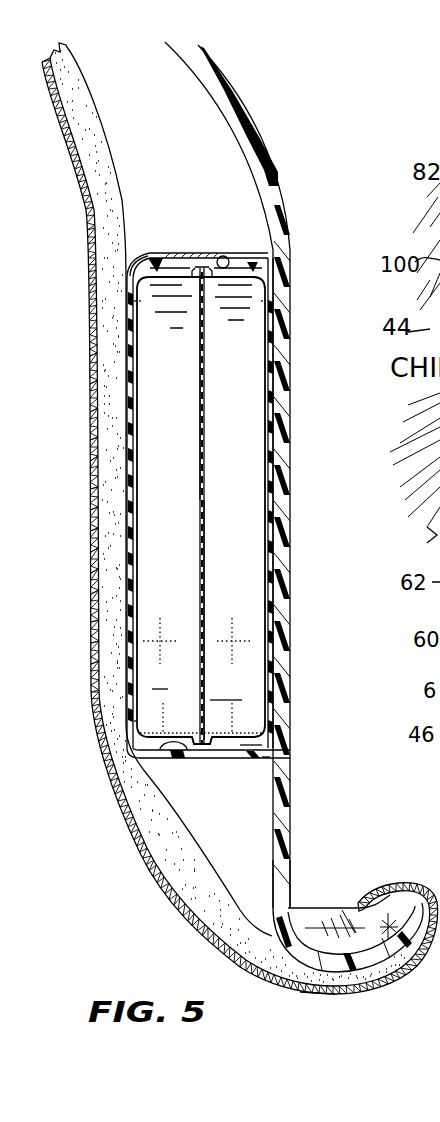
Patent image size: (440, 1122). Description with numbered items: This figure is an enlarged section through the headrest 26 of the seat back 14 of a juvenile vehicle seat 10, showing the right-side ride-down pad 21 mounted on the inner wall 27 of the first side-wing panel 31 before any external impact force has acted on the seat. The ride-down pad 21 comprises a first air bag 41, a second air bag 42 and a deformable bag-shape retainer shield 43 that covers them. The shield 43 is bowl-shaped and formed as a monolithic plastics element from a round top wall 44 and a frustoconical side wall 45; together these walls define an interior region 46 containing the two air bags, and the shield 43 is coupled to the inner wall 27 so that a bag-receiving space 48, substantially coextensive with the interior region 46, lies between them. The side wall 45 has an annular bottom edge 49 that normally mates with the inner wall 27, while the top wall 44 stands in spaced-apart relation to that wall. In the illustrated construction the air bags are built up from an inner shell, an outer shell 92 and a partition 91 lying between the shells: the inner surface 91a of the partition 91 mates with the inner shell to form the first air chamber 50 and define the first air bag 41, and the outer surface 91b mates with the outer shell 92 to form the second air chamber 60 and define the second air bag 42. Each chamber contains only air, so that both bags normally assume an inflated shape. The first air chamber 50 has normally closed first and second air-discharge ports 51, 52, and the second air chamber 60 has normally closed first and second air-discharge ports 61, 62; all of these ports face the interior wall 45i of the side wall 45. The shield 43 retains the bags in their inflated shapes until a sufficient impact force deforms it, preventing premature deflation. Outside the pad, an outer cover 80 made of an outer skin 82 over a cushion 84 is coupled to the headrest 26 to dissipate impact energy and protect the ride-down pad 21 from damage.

The juvenile vehicle seat 10 is at (243, 86).
The seat back 14 is at (280, 157).
The headrest 26 is at (263, 117).
The inner wall 27 is at (278, 818).
The first side-wing panel 31 is at (297, 823).
The first air bag 41 is at (220, 253).
The second air bag 42 is at (157, 263).
The deformable bag-shape retainer shield 43 is at (165, 762).
The top wall 44 is at (125, 320).
The side wall 45 is at (170, 253).
The interior wall 45i is at (223, 256).
The interior region 46 is at (215, 750).
The bag-receiving space 48 is at (255, 744).
The annular bottom edge 49 is at (232, 254).
The first air chamber 50 is at (245, 491).
The first air-discharge port 51 is at (238, 730).
The second air-discharge port 52 is at (237, 638).
The second air chamber 60 is at (153, 441).
The first air-discharge port 61 is at (162, 732).
The second air-discharge port 62 is at (158, 637).
The outer cover 80 is at (270, 990).
The outer skin 82 is at (175, 902).
The cushion 84 is at (170, 853).
The partition 91 is at (208, 383).
The inner surface 91a is at (204, 440).
The outer surface 91b is at (200, 462).
The outer shell 92 is at (120, 383).
The right-side ride-down pad 21 is at (200, 251).